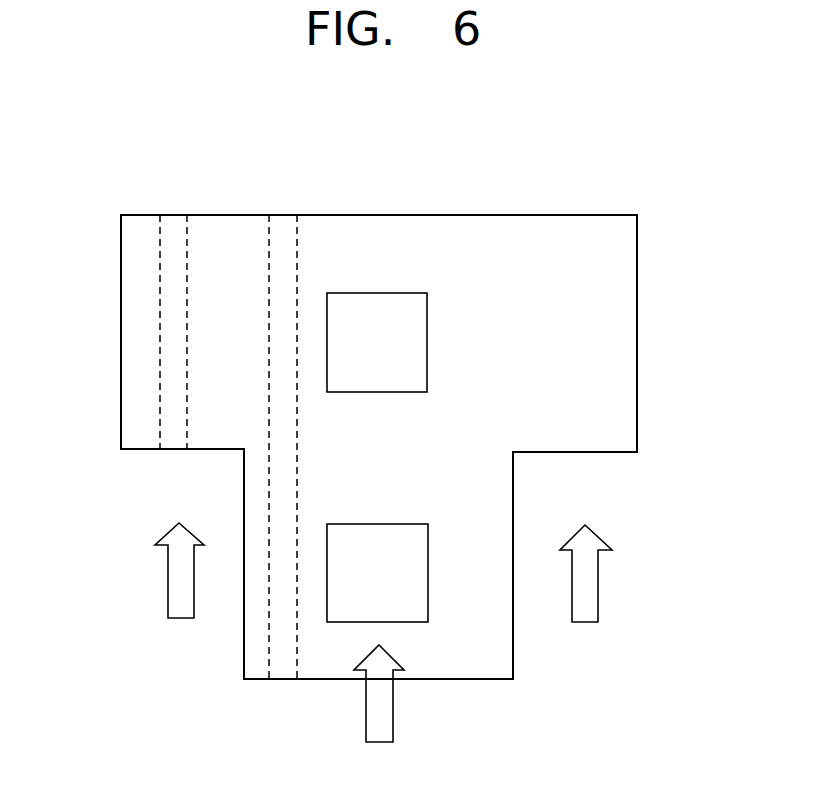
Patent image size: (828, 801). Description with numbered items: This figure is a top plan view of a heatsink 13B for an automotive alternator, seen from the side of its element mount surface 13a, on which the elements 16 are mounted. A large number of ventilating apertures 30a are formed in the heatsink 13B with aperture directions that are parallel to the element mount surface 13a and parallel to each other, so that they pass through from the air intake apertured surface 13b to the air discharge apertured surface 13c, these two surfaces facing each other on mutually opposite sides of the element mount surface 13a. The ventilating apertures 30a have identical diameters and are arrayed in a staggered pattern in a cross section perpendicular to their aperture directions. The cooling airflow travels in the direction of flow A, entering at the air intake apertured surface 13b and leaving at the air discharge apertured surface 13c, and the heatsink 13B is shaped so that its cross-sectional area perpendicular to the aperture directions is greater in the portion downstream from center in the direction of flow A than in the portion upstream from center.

The heatsink 13B is at (165, 127).
The element mount surface 13a is at (603, 373).
The air intake apertured surface 13b is at (140, 453).
The air discharge apertured surface 13c is at (144, 215).
The ventilating apertures 30a is at (168, 383).
The element / chip 16 is at (400, 313).
The direction of flow of cooling airflow A is at (593, 603).